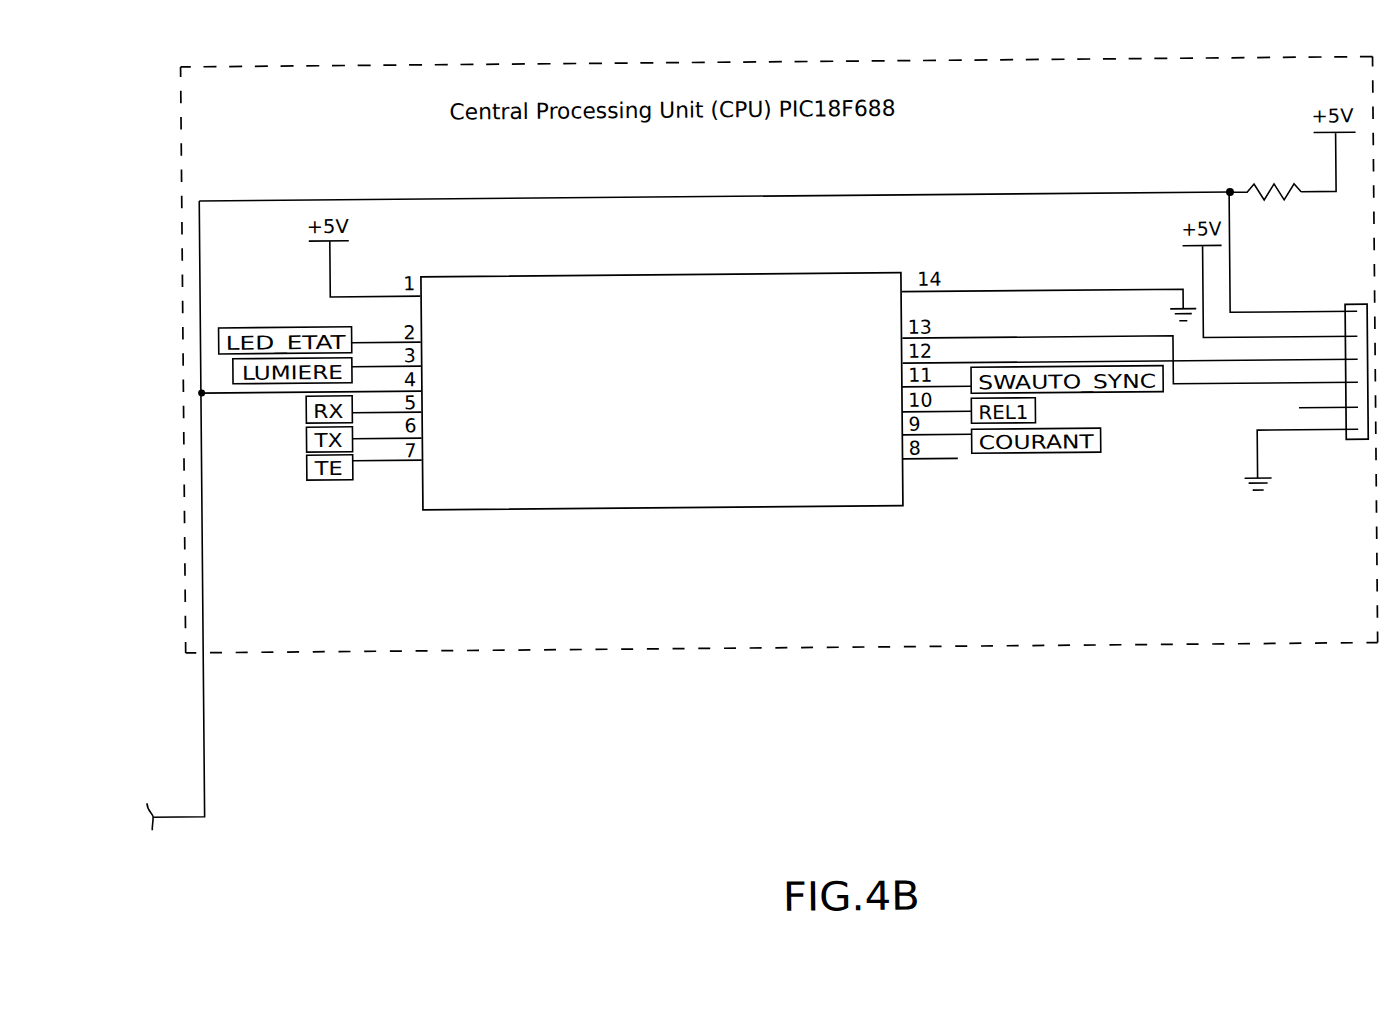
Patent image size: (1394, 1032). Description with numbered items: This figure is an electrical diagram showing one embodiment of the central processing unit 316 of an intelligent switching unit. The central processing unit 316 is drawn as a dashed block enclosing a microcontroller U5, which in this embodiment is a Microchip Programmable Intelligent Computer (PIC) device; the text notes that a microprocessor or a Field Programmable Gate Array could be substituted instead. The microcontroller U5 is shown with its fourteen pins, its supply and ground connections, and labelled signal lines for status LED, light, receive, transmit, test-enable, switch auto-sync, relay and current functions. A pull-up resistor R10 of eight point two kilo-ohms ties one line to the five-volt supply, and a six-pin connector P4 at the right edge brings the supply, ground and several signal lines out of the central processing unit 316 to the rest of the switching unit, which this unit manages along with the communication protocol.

The central processing unit 316 is at (754, 648).
The microcontroller PIC16F688 U5 is at (662, 376).
The resistor 8K2 R10 is at (1265, 193).
The connector P4 is at (1347, 357).